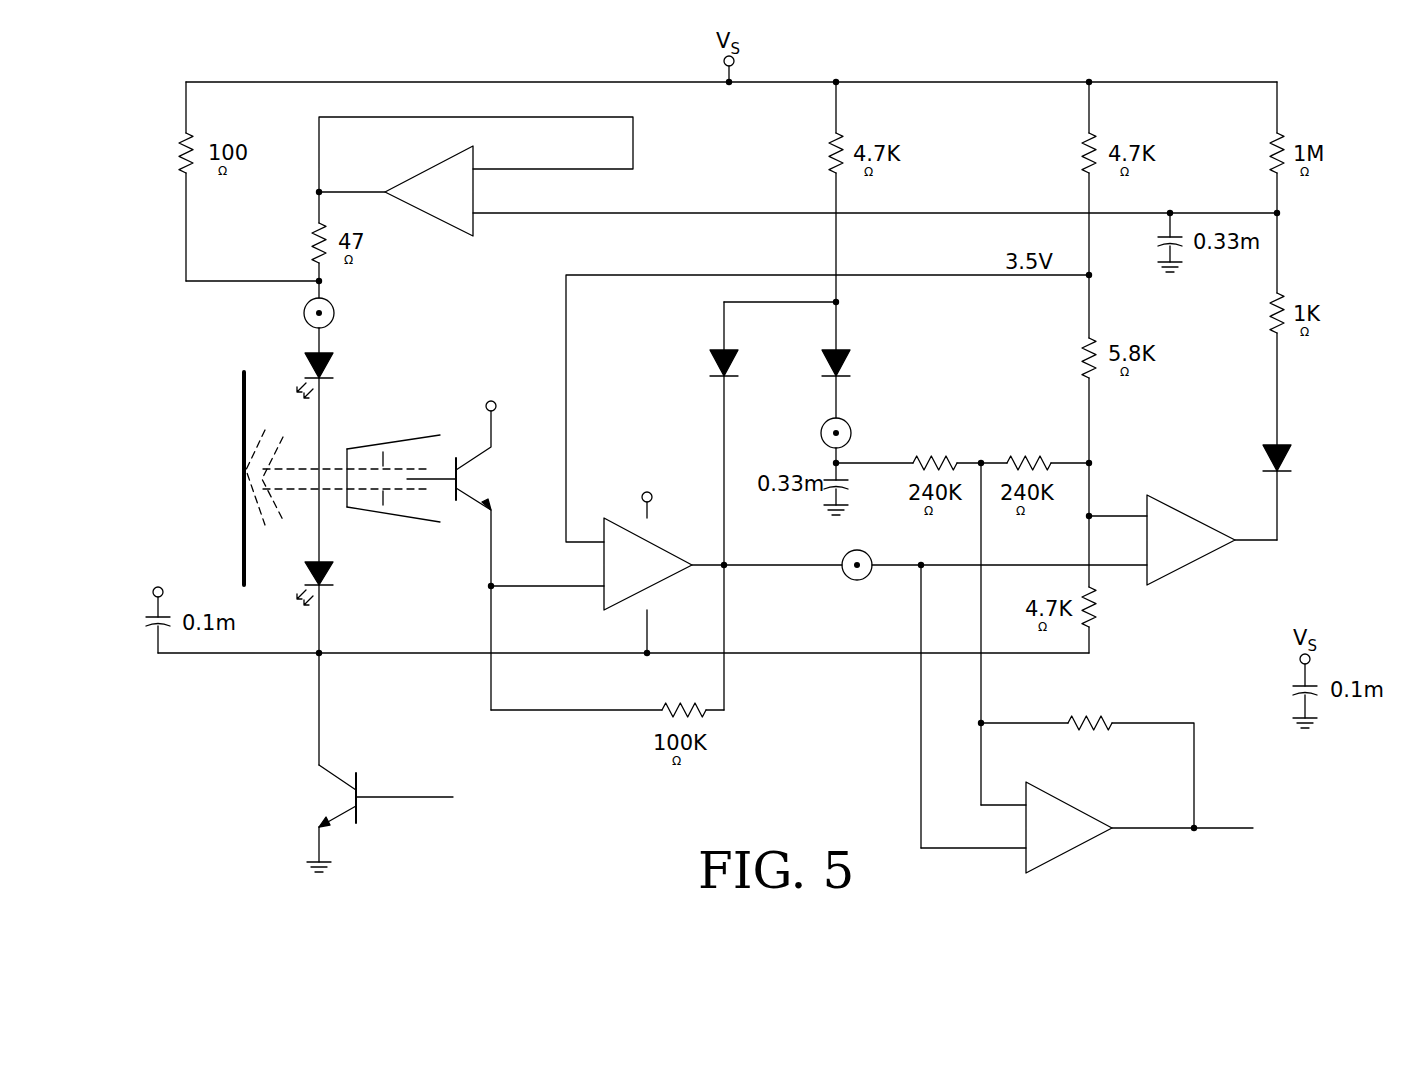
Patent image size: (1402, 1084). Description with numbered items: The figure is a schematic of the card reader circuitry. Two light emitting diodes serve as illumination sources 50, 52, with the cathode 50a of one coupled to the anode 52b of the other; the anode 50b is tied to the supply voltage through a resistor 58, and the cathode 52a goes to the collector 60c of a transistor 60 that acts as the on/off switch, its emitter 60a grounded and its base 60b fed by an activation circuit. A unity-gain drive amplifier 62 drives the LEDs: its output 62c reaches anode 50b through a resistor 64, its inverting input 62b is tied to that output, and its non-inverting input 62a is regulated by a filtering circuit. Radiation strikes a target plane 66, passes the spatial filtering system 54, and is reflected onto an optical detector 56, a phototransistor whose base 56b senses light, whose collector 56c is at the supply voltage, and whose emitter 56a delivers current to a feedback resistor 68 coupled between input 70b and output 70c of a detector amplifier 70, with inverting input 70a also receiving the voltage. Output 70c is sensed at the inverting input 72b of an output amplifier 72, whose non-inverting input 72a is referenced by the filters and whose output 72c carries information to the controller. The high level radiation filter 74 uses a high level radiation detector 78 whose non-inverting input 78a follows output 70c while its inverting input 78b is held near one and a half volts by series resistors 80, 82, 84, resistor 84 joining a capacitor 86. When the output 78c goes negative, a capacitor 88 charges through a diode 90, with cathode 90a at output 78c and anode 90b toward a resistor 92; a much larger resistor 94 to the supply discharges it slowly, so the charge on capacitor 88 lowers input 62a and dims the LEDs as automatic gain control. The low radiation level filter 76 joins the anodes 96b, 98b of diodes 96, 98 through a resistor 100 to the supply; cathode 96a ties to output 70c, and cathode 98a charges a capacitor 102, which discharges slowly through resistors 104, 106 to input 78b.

The illumination source 50 is at (351, 366).
The cathode 50a is at (329, 380).
The anode 50b is at (327, 358).
The illumination source 52 is at (351, 573).
The cathode 52a is at (329, 588).
The anode 52b is at (327, 565).
The spatial filtering system 54 is at (456, 344).
The optical detector 56 is at (448, 493).
The emitter 56a is at (488, 504).
The base 56b is at (458, 492).
The collector 56c is at (486, 446).
The resistor 58 is at (180, 151).
The transistor 60 is at (346, 804).
The emitter 60a is at (316, 828).
The base 60b is at (404, 798).
The collector 60c is at (316, 768).
The drive amplifier 62 is at (798, 192).
The non-inverting input 62a is at (478, 220).
The inverting input 62b is at (478, 168).
The output 62c is at (384, 186).
The resistor 64 is at (311, 243).
The target plane 66 is at (244, 393).
The feedback resistor 68 is at (670, 705).
The detector amplifier 70 is at (628, 558).
The inverting input 70a is at (604, 544).
The input 70b is at (604, 596).
The output 70c is at (698, 573).
The output amplifier 72 is at (1098, 803).
The non-inverting input 72a is at (1019, 808).
The inverting input 72b is at (1019, 853).
The output 72c is at (1114, 832).
The high level radiation filter 74 is at (792, 812).
The low radiation level filter 76 is at (852, 260).
The high level radiation detector 78 is at (1196, 542).
The non-inverting input 78a is at (1142, 514).
The inverting input 78b is at (1144, 569).
The output 78c is at (1236, 544).
The resistor 80 is at (1088, 148).
The resistor 82 is at (1088, 350).
The resistor 84 is at (1100, 619).
The capacitor 86 is at (148, 612).
The capacitor 88 is at (1166, 242).
The diode 90 is at (1310, 454).
The cathode 90a is at (1285, 471).
The anode 90b is at (1285, 448).
The resistor 92 is at (1269, 321).
The resistor 94 is at (1269, 156).
The diode 96 is at (690, 359).
The cathode 96a is at (716, 376).
The anode 96b is at (716, 352).
The diode 98 is at (871, 359).
The cathode 98a is at (846, 376).
The anode 98b is at (846, 352).
The resistor 100 is at (830, 148).
The capacitor 102 is at (854, 486).
The resistor 104 is at (946, 458).
The resistor 106 is at (1038, 458).